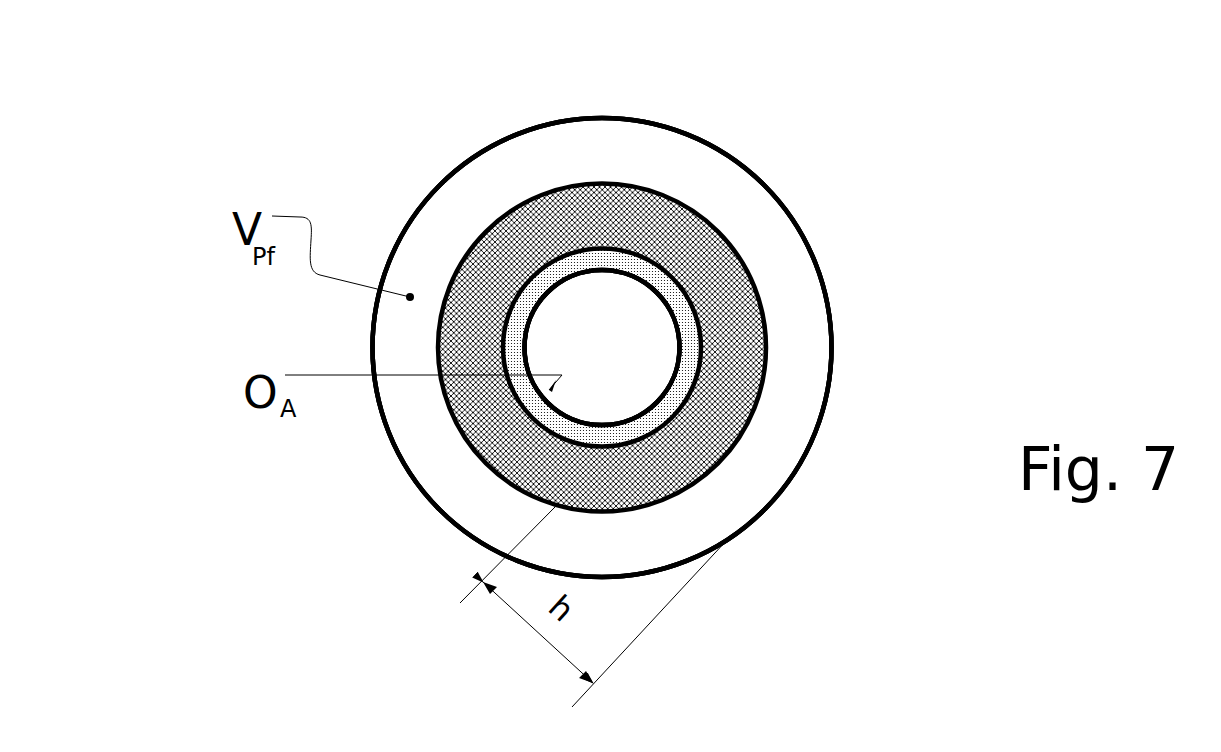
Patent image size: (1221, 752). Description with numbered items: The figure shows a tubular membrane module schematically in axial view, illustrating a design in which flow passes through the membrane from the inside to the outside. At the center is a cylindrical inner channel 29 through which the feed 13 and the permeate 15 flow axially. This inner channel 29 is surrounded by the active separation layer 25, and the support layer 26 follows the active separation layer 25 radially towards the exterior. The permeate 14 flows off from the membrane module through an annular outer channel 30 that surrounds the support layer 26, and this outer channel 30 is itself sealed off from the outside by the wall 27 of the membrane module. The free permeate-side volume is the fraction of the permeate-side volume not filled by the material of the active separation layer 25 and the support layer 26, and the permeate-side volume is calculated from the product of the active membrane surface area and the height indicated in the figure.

The feed 13 is at (627, 330).
The permeate 14 is at (624, 171).
The permeate 15 is at (627, 399).
The active separation layer 25 is at (665, 292).
The support layer 26 is at (738, 373).
The wall 27 is at (434, 184).
The cylindrical inner channel 29 is at (640, 355).
The annular outer channel 30 is at (697, 179).